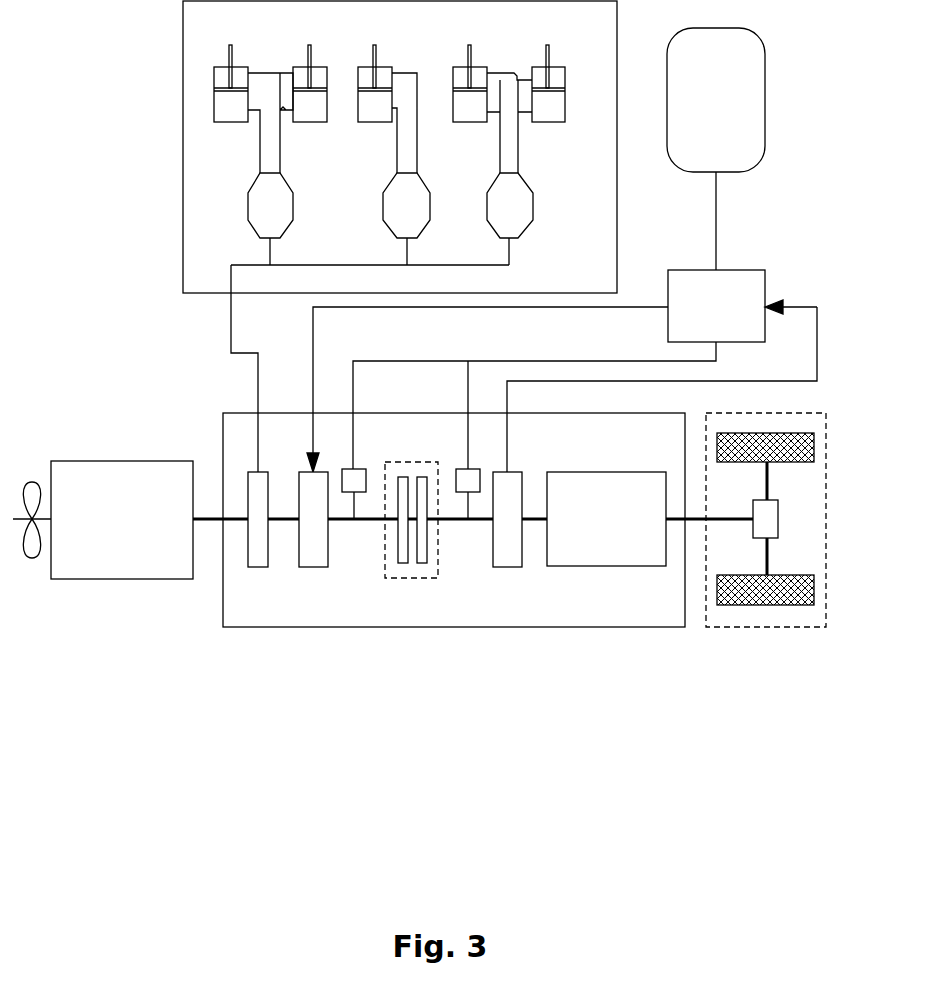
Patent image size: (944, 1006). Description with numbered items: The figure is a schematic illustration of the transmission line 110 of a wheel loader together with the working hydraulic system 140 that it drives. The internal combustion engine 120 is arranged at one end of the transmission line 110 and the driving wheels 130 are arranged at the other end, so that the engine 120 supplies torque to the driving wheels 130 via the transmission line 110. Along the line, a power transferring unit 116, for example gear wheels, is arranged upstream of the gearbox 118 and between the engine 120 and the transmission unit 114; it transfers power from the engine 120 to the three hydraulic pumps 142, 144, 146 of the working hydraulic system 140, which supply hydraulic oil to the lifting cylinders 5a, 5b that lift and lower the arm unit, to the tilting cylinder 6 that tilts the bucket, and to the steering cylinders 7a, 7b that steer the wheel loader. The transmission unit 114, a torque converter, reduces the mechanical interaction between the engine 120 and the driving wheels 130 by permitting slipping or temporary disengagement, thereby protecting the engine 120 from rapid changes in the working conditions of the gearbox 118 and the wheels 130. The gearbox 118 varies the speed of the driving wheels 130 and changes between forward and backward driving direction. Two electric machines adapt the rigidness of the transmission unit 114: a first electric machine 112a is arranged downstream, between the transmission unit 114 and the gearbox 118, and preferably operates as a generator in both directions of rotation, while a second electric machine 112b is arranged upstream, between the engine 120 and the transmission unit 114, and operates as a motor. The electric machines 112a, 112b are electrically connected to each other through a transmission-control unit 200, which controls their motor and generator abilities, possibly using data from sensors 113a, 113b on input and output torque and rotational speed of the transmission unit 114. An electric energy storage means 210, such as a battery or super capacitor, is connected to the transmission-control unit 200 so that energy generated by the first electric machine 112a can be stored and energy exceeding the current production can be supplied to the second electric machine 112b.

The working hydraulic system 140 is at (200, 22).
The lifting cylinder 5a is at (242, 72).
The lifting cylinder 5b is at (317, 72).
The tilting cylinder 6 is at (384, 72).
The steering cylinder 7a is at (478, 72).
The steering cylinder 7b is at (556, 72).
The hydraulic pump 142 is at (280, 227).
The hydraulic pump 144 is at (417, 227).
The hydraulic pump 146 is at (516, 227).
The electric energy storage means 210 is at (750, 47).
The transmission-control unit 200 is at (562, 371).
The internal combustion engine 120 is at (90, 468).
The transmission line 110 is at (233, 422).
The power transferring unit 116 is at (253, 560).
The second electric machine 112b is at (313, 558).
The sensor 113a is at (361, 472).
The transmission unit 114 is at (413, 572).
The sensor 113b is at (460, 472).
The first electric machine 112a is at (503, 558).
The gearbox 118 is at (600, 560).
The driving wheels 130 is at (817, 480).